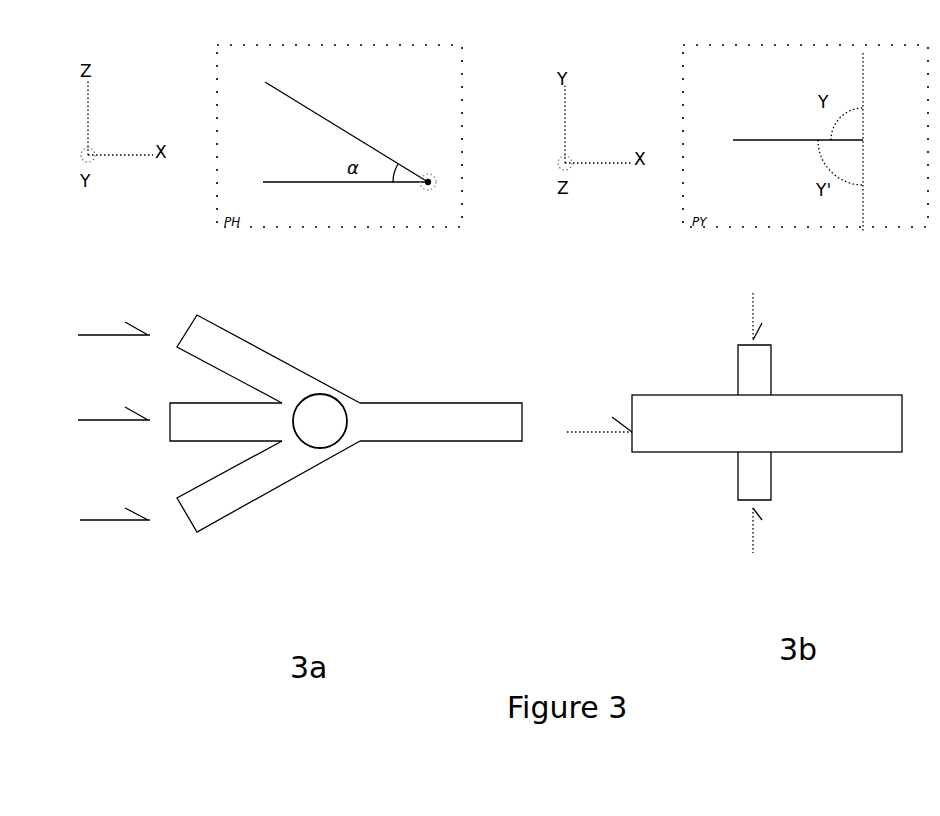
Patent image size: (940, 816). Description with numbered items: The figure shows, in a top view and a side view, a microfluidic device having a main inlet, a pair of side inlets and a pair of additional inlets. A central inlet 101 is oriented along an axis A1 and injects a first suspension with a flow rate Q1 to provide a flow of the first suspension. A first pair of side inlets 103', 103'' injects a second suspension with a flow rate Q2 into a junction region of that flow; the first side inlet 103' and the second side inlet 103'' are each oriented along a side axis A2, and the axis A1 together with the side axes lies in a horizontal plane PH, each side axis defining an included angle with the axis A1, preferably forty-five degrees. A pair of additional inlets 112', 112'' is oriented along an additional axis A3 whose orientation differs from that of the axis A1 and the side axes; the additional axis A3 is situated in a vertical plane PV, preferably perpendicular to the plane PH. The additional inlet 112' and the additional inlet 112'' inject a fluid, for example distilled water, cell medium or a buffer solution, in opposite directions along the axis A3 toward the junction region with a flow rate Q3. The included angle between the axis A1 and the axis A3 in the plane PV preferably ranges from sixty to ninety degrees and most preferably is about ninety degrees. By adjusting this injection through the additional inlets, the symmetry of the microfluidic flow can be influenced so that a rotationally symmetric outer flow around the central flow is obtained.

The central inlet 101 is at (217, 418).
The first side inlet 103' is at (268, 349).
The second side inlet 103'' is at (268, 489).
The additional inlet 112' is at (583, 384).
The additional inlet 112'' is at (812, 482).
The axis A1 is at (557, 156).
The axis A2 is at (340, 123).
The additional axis A3 is at (324, 425).
The flow rate Q1 is at (355, 413).
The flow rate Q2 is at (113, 414).
The flow rate Q3 is at (733, 423).